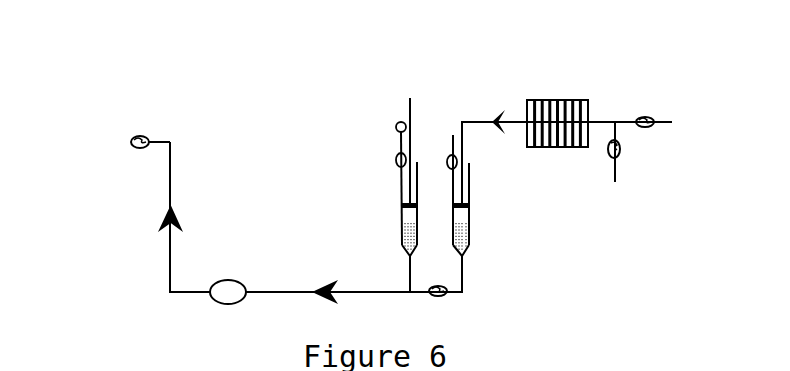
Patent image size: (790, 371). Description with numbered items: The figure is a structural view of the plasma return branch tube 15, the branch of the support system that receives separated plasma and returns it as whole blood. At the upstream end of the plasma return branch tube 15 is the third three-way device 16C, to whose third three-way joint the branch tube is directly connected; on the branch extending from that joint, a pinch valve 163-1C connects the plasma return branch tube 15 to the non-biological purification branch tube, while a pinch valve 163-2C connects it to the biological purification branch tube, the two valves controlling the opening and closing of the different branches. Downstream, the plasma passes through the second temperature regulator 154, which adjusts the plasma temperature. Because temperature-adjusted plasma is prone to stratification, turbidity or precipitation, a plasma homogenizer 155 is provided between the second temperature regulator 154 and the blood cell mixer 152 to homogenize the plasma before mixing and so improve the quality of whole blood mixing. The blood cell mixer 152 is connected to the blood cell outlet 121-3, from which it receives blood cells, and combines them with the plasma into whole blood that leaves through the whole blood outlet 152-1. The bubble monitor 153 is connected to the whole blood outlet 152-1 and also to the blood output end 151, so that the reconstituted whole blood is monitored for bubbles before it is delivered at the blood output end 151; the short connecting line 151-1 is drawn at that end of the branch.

The plasma return branch tube 15 is at (540, 222).
The blood output end 151 is at (128, 140).
The connecting line 151-1 is at (143, 138).
The bubble monitor 153 is at (235, 288).
The whole blood outlet 152-1 is at (303, 290).
The blood cell outlet 121-3 is at (408, 113).
The blood cell mixer 152 is at (402, 245).
The plasma homogenizer 155 is at (467, 243).
The second temperature regulator 154 is at (542, 103).
The third three-way device 16C is at (615, 122).
The pinch valve 163-2C is at (611, 156).
The pinch valve 163-1C is at (647, 126).